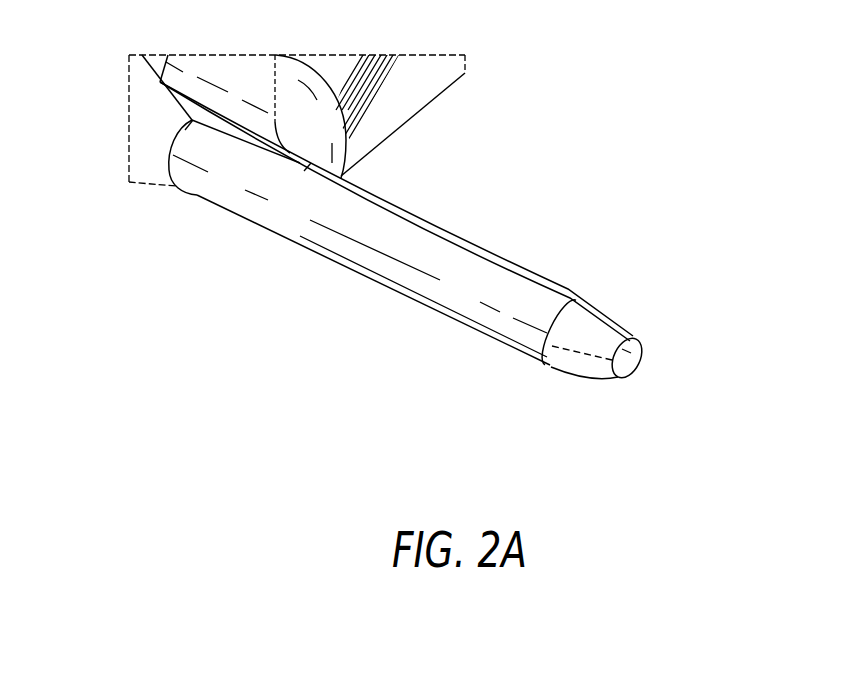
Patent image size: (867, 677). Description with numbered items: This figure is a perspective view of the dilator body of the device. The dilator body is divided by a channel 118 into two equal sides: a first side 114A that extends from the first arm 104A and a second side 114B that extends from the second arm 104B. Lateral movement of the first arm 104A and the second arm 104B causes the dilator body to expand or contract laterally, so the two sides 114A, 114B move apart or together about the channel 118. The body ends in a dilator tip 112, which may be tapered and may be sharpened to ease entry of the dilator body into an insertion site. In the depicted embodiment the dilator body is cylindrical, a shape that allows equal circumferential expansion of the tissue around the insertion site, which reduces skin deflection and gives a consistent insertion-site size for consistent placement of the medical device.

The first arm 104A is at (145, 74).
The second arm 104B is at (358, 98).
The first side 114A is at (387, 262).
The second side 114B is at (475, 240).
The dilator tip 112 is at (580, 350).
The channel 118 is at (625, 357).